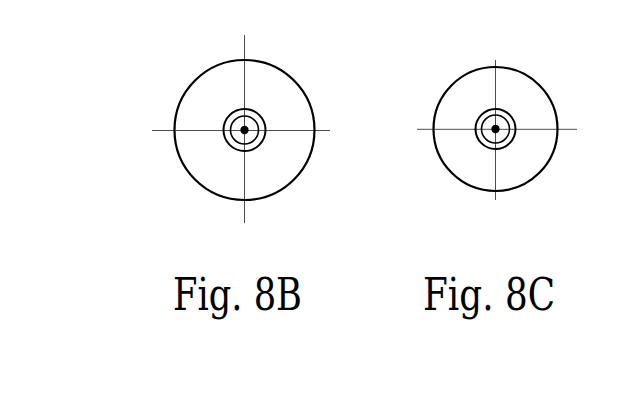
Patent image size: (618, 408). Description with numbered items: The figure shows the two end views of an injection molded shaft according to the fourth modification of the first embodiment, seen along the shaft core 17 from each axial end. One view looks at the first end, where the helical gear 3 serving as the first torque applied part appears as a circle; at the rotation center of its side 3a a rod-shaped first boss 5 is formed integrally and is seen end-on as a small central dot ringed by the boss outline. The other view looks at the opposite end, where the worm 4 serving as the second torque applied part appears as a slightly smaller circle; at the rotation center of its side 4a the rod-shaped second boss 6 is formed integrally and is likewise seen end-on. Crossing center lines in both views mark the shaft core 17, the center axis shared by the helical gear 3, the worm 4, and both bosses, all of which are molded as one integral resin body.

In FIG. 8B, the helical gear 3 is at (268, 62).
In FIG. 8B, the side of the helical gear 3a is at (277, 85).
In FIG. 8C, the worm 4 is at (468, 72).
In FIG. 8C, the side of the worm 4a is at (522, 102).
In FIG. 8B, the first boss 5 is at (248, 134).
In FIG. 8C, the second boss 6 is at (500, 134).
In FIG. 8B, the shaft core 17 is at (244, 131).
In FIG. 8C, the shaft core 17 is at (492, 136).